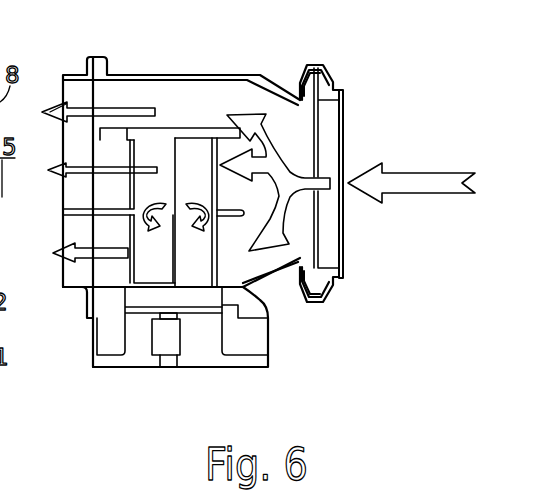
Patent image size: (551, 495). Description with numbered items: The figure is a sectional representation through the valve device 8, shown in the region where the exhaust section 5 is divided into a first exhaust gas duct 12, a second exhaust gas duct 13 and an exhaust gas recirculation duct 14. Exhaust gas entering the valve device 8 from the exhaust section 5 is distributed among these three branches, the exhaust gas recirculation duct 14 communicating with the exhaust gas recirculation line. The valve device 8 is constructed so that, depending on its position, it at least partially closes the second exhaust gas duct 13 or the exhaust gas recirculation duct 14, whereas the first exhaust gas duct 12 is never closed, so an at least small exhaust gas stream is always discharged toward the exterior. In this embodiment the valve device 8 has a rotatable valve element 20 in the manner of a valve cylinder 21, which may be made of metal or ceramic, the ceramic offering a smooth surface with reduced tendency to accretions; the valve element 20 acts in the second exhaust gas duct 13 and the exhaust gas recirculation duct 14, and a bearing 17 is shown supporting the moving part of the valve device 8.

The exhaust section 5 is at (362, 144).
The valve device 8 is at (338, 74).
The first exhaust gas duct 12 is at (212, 115).
The second exhaust gas duct 13 is at (125, 162).
The exhaust gas recirculation duct 14 is at (125, 243).
The bearing 17 is at (157, 340).
The valve element 20 is at (197, 295).
The valve cylinder 21 is at (320, 367).